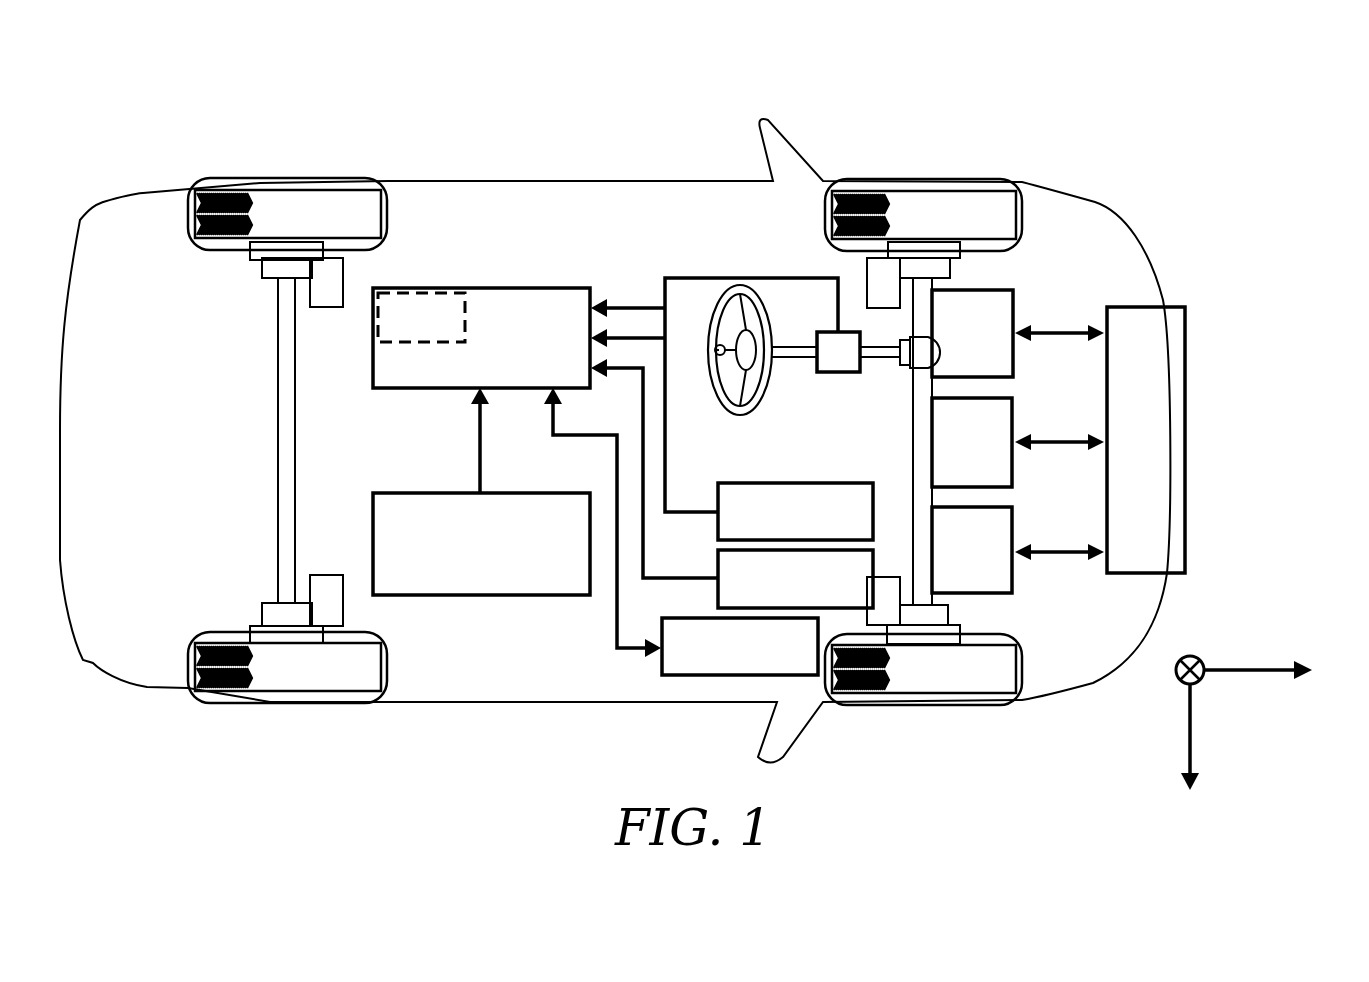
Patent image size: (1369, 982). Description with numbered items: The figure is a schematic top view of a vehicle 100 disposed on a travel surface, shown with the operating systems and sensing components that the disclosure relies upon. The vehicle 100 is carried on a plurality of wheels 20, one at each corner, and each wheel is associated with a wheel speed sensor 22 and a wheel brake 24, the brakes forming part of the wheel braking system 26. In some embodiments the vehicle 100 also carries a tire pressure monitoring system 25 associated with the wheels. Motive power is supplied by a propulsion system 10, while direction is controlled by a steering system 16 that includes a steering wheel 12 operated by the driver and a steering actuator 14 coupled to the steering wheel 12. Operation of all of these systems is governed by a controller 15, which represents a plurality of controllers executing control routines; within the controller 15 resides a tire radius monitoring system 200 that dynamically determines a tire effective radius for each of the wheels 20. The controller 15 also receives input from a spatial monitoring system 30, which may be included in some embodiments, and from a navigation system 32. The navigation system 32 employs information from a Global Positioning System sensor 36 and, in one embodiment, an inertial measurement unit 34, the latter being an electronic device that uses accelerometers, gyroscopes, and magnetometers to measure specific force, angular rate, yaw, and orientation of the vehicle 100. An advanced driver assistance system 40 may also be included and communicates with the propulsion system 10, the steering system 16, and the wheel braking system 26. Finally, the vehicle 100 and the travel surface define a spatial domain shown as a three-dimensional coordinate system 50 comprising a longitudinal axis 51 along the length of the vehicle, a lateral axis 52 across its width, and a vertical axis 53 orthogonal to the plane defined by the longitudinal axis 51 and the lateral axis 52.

The vehicle 100 is at (833, 104).
The wheels 20 is at (230, 178).
The wheel speed sensors 22 is at (262, 268).
The wheel brakes 24 is at (250, 255).
The tire pressure monitoring system (TPMS) 25 is at (327, 308).
The propulsion system 10 is at (958, 344).
The steering wheel 12 is at (740, 417).
The steering actuator 14 is at (837, 373).
The controller 15 is at (473, 353).
The tire radius monitoring system 200 is at (400, 328).
The spatial monitoring system 30 is at (466, 556).
The navigation system 32 is at (726, 656).
The inertial measurement unit (IMU) 34 is at (781, 521).
The Global Positioning System (GPS) sensor 36 is at (781, 588).
The steering system 16 is at (958, 451).
The wheel braking system 26 is at (958, 559).
The advanced driver assistance system (ADAS) 40 is at (1131, 451).
The three-dimensional coordinate system 50 is at (1260, 720).
The longitudinal (X) axis 51 is at (1316, 681).
The lateral (Y) axis 52 is at (1176, 816).
The vertical (Z) axis 53 is at (1176, 648).